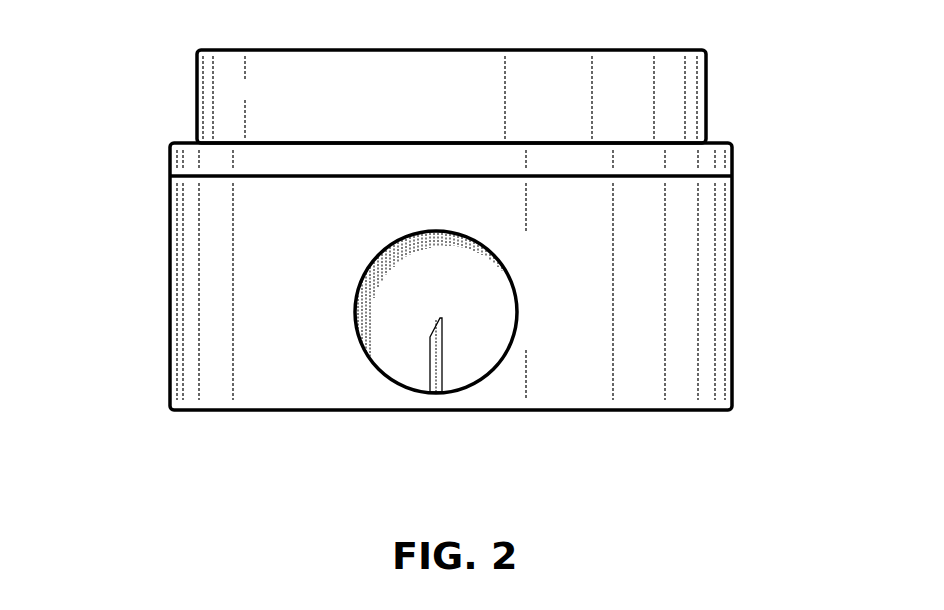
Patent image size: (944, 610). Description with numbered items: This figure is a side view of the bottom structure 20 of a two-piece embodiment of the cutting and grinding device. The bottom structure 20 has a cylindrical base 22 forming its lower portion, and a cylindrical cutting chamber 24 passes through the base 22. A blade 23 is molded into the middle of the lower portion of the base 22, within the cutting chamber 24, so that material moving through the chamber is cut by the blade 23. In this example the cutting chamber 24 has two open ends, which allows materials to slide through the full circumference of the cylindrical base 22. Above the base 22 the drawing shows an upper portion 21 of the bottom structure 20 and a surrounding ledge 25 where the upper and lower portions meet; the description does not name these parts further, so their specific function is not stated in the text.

The bottom structure 20 is at (118, 243).
The upper boss 21 is at (208, 102).
The base 22 is at (273, 355).
The blade 23 is at (435, 377).
The cylindrical cutting chamber 24 is at (467, 315).
The flange 25 is at (705, 160).